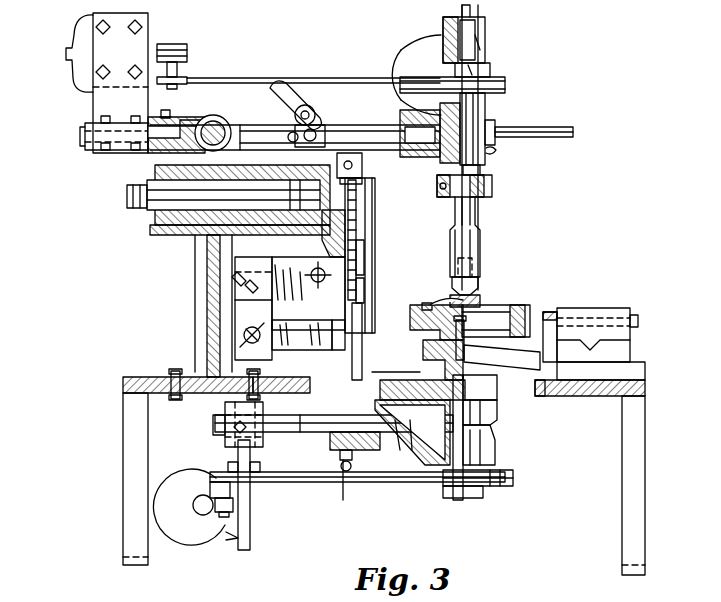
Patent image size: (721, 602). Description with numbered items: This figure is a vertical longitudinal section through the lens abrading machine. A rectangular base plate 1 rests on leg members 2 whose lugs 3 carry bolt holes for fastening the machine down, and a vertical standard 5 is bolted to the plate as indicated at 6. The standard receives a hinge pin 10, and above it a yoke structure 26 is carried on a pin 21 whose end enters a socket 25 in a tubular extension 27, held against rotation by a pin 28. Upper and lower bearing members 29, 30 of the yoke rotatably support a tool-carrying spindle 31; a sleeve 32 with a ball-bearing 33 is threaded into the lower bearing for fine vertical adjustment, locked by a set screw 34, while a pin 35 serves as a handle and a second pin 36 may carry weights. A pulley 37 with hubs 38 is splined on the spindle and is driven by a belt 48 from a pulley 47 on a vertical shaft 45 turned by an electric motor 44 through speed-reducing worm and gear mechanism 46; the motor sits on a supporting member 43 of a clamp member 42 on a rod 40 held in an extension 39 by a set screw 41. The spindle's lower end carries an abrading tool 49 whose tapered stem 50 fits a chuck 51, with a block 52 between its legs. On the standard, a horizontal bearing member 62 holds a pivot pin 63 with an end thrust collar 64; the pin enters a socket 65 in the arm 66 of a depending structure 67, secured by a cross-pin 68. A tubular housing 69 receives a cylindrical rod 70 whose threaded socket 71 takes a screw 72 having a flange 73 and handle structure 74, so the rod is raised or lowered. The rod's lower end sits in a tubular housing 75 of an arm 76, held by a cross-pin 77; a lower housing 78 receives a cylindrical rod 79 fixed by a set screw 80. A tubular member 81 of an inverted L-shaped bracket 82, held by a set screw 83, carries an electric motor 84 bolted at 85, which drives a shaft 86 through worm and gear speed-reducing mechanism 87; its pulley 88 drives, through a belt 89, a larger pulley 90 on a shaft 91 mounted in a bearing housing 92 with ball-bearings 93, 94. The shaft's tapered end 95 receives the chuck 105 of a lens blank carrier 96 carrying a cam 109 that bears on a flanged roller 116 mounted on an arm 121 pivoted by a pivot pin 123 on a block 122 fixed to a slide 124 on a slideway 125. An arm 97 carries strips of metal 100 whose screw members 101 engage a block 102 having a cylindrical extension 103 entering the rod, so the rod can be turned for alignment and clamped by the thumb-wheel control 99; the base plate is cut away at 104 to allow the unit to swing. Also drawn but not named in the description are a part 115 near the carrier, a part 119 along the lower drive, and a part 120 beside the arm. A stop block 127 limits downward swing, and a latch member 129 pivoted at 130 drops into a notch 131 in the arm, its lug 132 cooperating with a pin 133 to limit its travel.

The base plate 1 is at (648, 392).
The leg member 2 is at (635, 445).
The lug 3 is at (645, 562).
The vertical standard 5 is at (207, 258).
The bolted connection 6 is at (178, 375).
The hinge pin 10 is at (213, 120).
The pin 21 is at (398, 160).
The socket 25 is at (405, 115).
The yoke structure 26 is at (412, 55).
The tubular extension 27 is at (432, 163).
The pin 28 is at (415, 157).
The bearing member 29 is at (490, 45).
The bearing 30 is at (487, 110).
The tool-carrying spindle 31 is at (478, 213).
The sleeve 32 is at (483, 170).
The ball-bearing 33 is at (492, 186).
The set screw 34 is at (497, 152).
The pin 35 is at (540, 130).
The second pin 36 is at (485, 25).
The pulley 37 is at (505, 82).
The hubs 38 is at (480, 68).
The extension 39 is at (195, 120).
The rod 40 is at (152, 154).
The set screw 41 is at (165, 110).
The clamp member 42 is at (113, 150).
The supporting member 43 is at (100, 95).
The electric motor 44 is at (72, 28).
The vertical shaft 45 is at (177, 66).
The speed-reducing worm and gear mechanism 46 is at (178, 44).
The pulley 47 is at (185, 78).
The belt 48 is at (244, 78).
The abrading tool 49 is at (446, 296).
The tapered stem 50 is at (472, 264).
The chuck 51 is at (470, 245).
The block 52 is at (476, 284).
The bearing member 62 is at (210, 230).
The pivot pin 63 is at (180, 235).
The end thrust collar 64 is at (150, 222).
The socket 65 is at (280, 240).
The arm 66 is at (240, 258).
The depending structure 67 is at (375, 262).
The cross-pin 68 is at (298, 215).
The tubular housing 69 is at (364, 282).
The cylindrical rod 70 is at (362, 303).
The threaded socket 71 is at (364, 248).
The screw 72 is at (356, 222).
The flange 73 is at (362, 182).
The handle structure 74 is at (360, 160).
The tubular housing 75 is at (440, 378).
The arm 76 is at (405, 440).
The cross-pin 77 is at (312, 415).
The tubular housing 78 is at (380, 447).
The cylindrical rod 79 is at (303, 432).
The set screw 80 is at (355, 463).
The tubular member 81 is at (225, 412).
The bracket 82 is at (250, 518).
The set screw 83 is at (238, 427).
The electric motor 84 is at (185, 520).
The bolts 85 is at (250, 540).
The shaft 86 is at (233, 500).
The worm and gear speed-reducing mechanism 87 is at (222, 517).
The pulley 88 is at (215, 475).
The belt 89 is at (335, 491).
The pulley 90 is at (495, 490).
The shaft 91 is at (468, 420).
The bearing housing 92 is at (500, 405).
The ball-bearing 93 is at (497, 385).
The ball-bearing 94 is at (495, 455).
The tapered end 95 is at (440, 360).
The lens blank carrier 96 is at (517, 294).
The arm 97 is at (292, 290).
The thumb-wheel control 99 is at (318, 288).
The strip of metal 100 is at (220, 308).
The screw member 101 is at (220, 330).
The block 102 is at (292, 345).
The cylindrical extension 103 is at (336, 340).
The cut-away 104 is at (395, 372).
The chuck 105 is at (504, 362).
The cam 109 is at (520, 330).
The marker 115 is at (425, 303).
The flanged roller 116 is at (466, 335).
The bar 119 is at (302, 482).
The nut 120 is at (352, 478).
The arm 121 is at (555, 396).
The block 122 is at (622, 318).
The pivot pin 123 is at (592, 316).
The slide 124 is at (620, 345).
The slideway 125 is at (623, 368).
The block 127 is at (255, 178).
The latch member 129 is at (282, 90).
The pivot 130 is at (320, 133).
The notch 131 is at (305, 165).
The lug 132 is at (307, 112).
The pin 133 is at (292, 134).